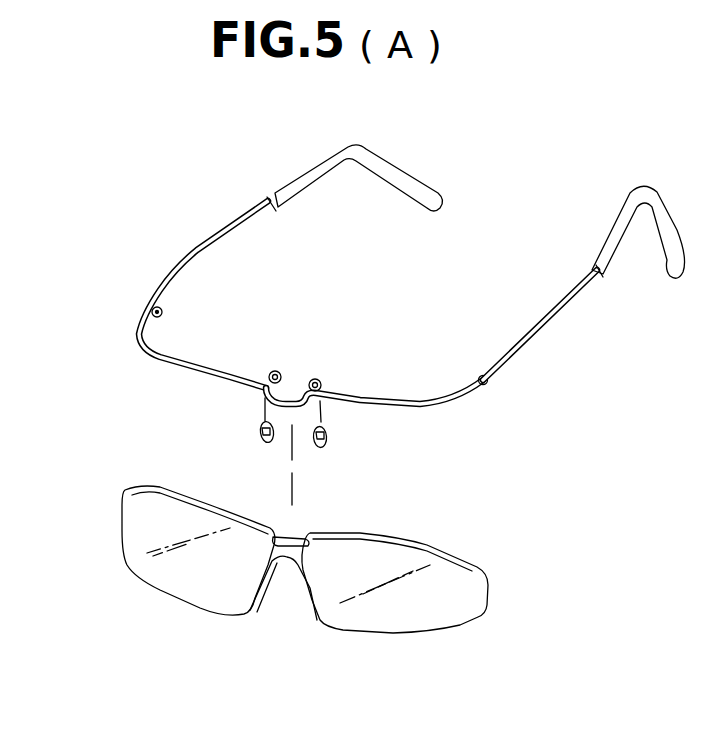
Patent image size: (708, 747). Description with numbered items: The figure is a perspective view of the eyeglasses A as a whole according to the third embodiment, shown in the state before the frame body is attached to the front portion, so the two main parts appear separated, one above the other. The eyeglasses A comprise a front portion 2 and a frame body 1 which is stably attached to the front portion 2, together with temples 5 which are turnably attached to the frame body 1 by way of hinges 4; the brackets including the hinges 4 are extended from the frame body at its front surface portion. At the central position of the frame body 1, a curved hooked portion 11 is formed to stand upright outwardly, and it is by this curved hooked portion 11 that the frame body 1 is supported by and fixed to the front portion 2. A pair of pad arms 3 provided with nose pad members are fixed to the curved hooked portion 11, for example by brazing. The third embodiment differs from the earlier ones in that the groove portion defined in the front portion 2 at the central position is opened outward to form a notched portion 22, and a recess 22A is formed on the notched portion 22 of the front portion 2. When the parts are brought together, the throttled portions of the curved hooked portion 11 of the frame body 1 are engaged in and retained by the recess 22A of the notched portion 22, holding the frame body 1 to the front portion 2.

The eyeglasses A is at (507, 200).
The frame body 1 is at (380, 396).
The curved hooked portion 11 is at (288, 376).
The pad arms 3 is at (327, 413).
The hinges 4 is at (485, 376).
The temples 5 is at (546, 335).
The front portion 2 is at (368, 632).
The notched portion 22 is at (310, 532).
The recess 22A is at (253, 590).